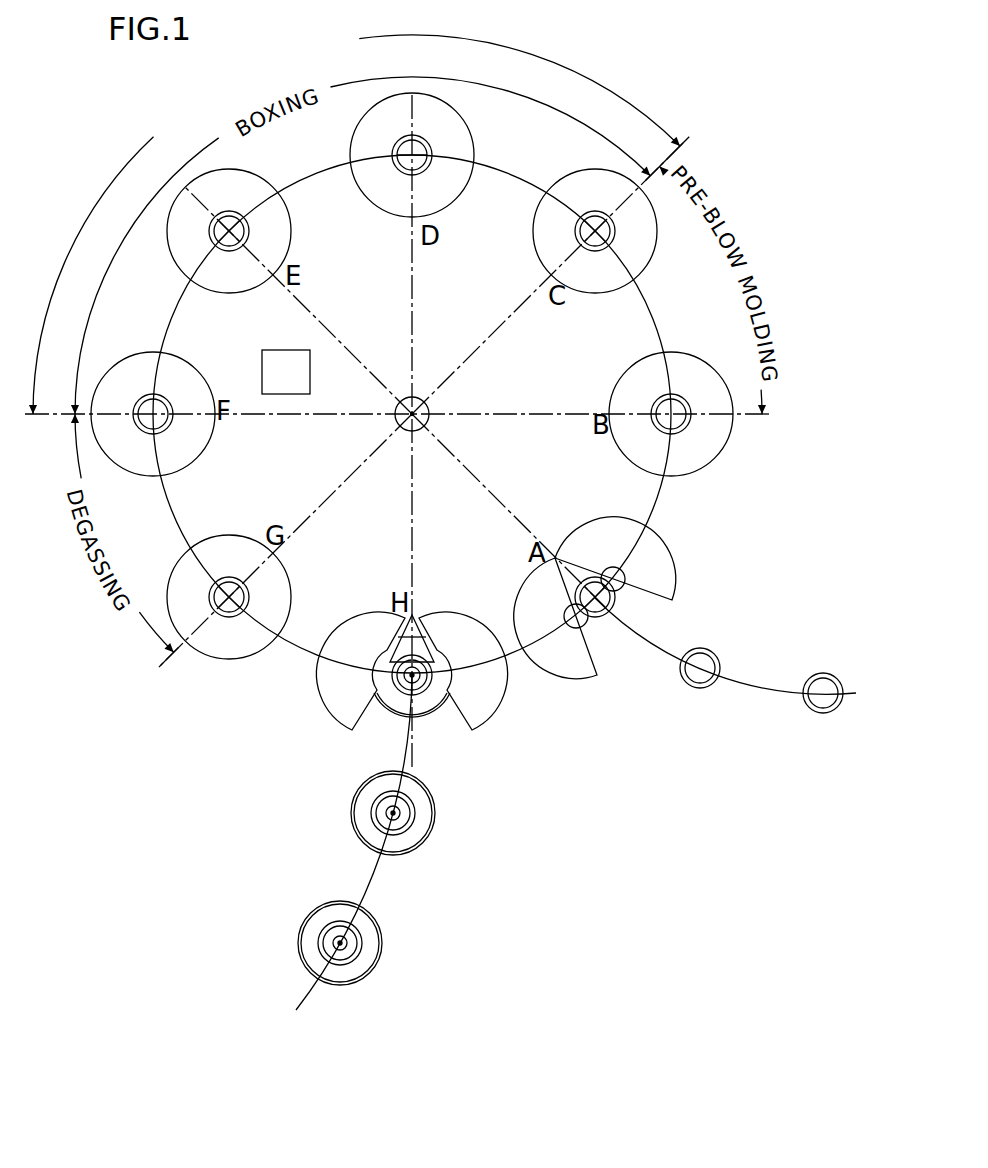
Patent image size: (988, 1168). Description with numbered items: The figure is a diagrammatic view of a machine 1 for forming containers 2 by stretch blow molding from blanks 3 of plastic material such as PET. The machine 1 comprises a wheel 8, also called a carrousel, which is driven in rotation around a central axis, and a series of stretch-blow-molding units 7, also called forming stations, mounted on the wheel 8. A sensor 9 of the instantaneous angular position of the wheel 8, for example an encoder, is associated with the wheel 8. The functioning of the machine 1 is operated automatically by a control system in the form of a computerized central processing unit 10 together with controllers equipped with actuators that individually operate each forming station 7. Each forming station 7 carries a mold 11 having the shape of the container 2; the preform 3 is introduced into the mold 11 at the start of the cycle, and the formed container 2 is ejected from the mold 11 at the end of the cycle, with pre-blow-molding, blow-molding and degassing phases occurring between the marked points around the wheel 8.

The machine 1 is at (630, 86).
The container 2 is at (427, 720).
The blank 3 is at (612, 607).
The stretch-blow-molding unit 7 is at (389, 213).
The wheel 8 is at (653, 315).
The sensor 9 is at (430, 408).
The computerized central processing unit 10 is at (398, 407).
The mold 11 is at (462, 148).